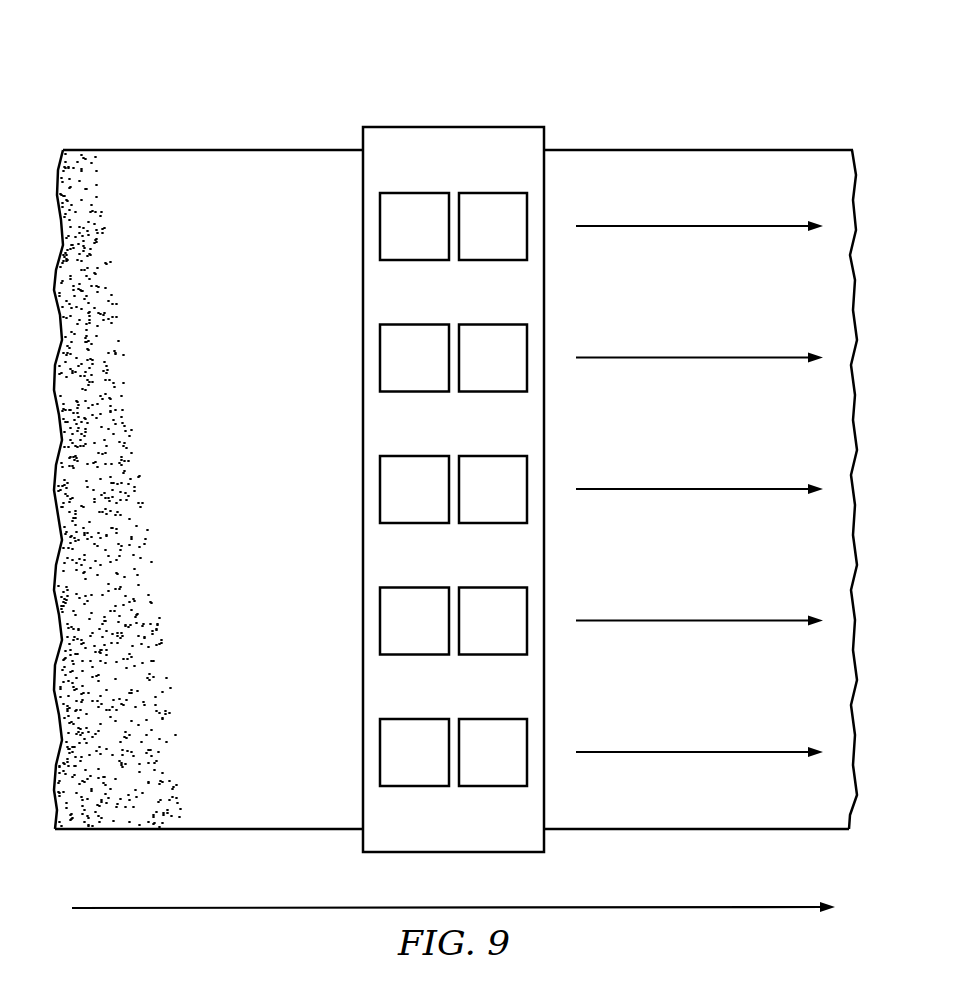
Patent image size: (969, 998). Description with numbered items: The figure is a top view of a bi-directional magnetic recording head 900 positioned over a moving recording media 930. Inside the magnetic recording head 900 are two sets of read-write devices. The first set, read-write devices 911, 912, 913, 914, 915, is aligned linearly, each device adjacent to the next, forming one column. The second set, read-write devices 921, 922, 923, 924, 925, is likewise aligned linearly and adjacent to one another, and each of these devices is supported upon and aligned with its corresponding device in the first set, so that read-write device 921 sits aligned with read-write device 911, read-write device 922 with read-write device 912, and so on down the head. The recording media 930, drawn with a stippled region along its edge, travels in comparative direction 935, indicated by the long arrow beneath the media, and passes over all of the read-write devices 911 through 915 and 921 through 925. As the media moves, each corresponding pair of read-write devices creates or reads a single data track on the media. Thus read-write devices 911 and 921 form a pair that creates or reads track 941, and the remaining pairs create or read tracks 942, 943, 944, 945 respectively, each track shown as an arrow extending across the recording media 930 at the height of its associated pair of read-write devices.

The magnetic recording head 900 is at (358, 108).
The read-write device 911 is at (394, 239).
The read-write device 912 is at (394, 370).
The read-write device 913 is at (394, 502).
The read-write device 914 is at (394, 634).
The read-write device 915 is at (394, 765).
The read-write device 921 is at (514, 239).
The read-write device 922 is at (514, 370).
The read-write device 923 is at (514, 502).
The read-write device 924 is at (514, 634).
The read-write device 925 is at (514, 765).
The recording media 930 is at (192, 526).
The comparative direction 935 is at (698, 905).
The track 941 is at (778, 222).
The track 942 is at (778, 354).
The track 943 is at (778, 485).
The track 944 is at (778, 616).
The track 945 is at (778, 748).